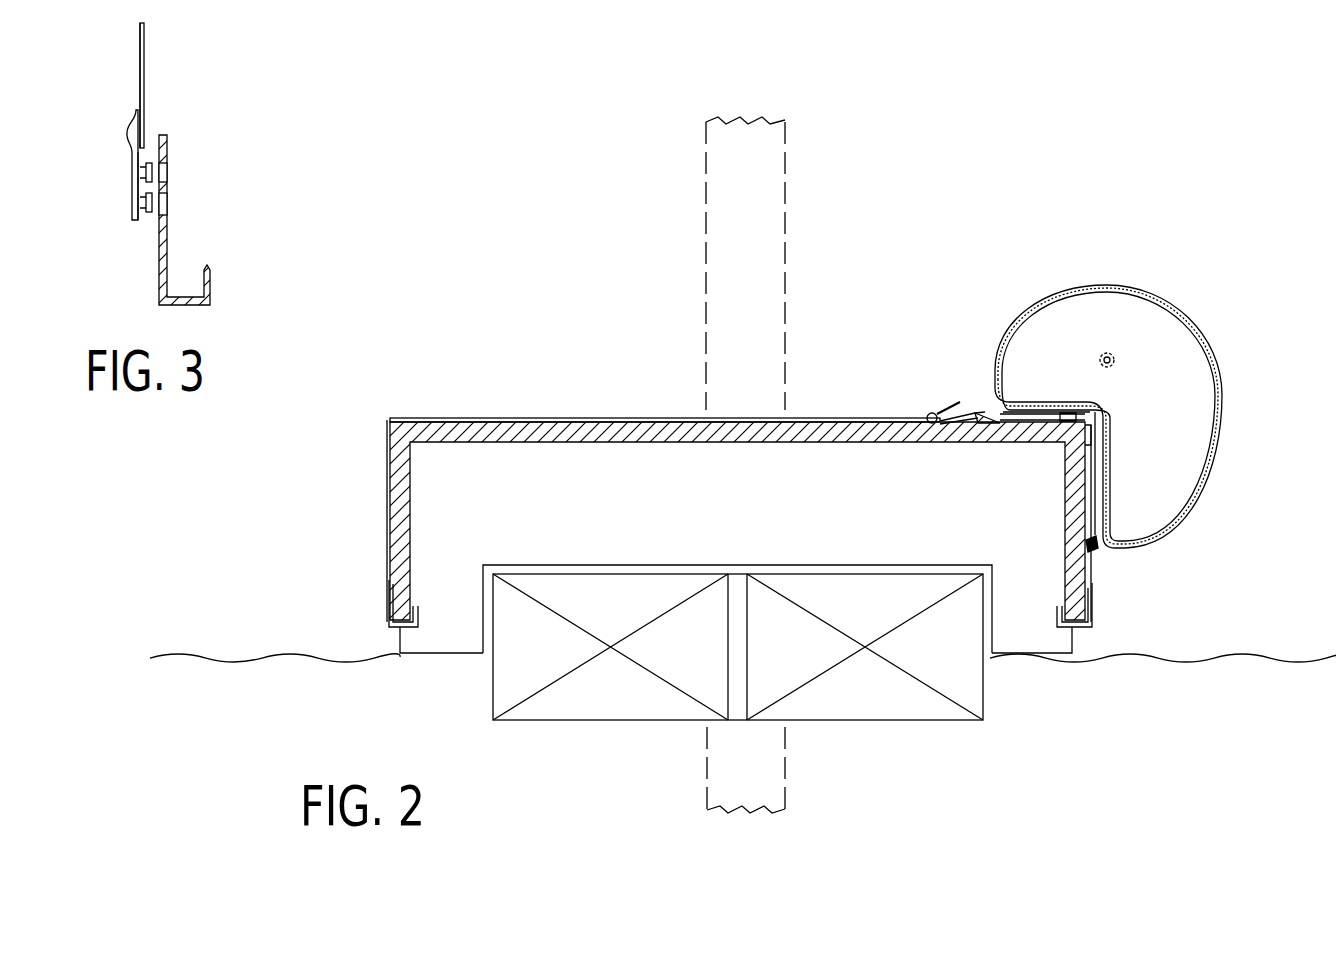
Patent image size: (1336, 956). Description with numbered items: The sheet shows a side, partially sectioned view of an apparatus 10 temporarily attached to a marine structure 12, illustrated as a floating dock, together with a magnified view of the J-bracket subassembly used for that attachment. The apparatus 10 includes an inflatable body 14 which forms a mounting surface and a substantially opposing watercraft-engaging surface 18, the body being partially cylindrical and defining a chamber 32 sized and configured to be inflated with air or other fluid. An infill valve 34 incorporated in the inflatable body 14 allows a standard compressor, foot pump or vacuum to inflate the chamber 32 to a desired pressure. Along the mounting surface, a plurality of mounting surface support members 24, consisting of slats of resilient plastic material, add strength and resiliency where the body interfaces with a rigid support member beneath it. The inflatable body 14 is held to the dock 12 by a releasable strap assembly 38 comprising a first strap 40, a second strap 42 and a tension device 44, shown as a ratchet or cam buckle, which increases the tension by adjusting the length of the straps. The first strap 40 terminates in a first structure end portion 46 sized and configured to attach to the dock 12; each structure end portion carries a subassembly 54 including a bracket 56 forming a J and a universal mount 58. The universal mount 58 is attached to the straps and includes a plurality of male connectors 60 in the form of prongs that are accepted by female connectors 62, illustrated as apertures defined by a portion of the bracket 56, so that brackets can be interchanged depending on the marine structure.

In FIG. 2, the apparatus 10 is at (1220, 291).
In FIG. 2, the marine structure 12 is at (1066, 640).
In FIG. 2, the inflatable body 14 is at (1230, 348).
In FIG. 2, the watercraft-engaging surface 18 is at (1222, 412).
In FIG. 2, the mounting surface support members 24 is at (1047, 405).
In FIG. 2, the chamber 32 is at (1176, 389).
In FIG. 2, the infill valve 34 is at (1107, 348).
In FIG. 2, the releasable strap assembly 38 is at (826, 403).
In FIG. 2, the first strap 40 is at (521, 418).
In FIG. 2, the second strap 42 is at (1090, 544).
In FIG. 2, the tension device 44 is at (935, 413).
In FIG. 2, the first structure end portion 46 is at (384, 457).
In FIG. 3, the subassembly 54 is at (108, 129).
In FIG. 2, the subassembly 54 is at (369, 535).
In FIG. 3, the bracket 56 is at (160, 269).
In FIG. 2, the bracket 56 is at (391, 615).
In FIG. 3, the universal mount 58 is at (138, 181).
In FIG. 3, the male connectors 60 is at (148, 158).
In FIG. 3, the female connectors 62 is at (165, 171).